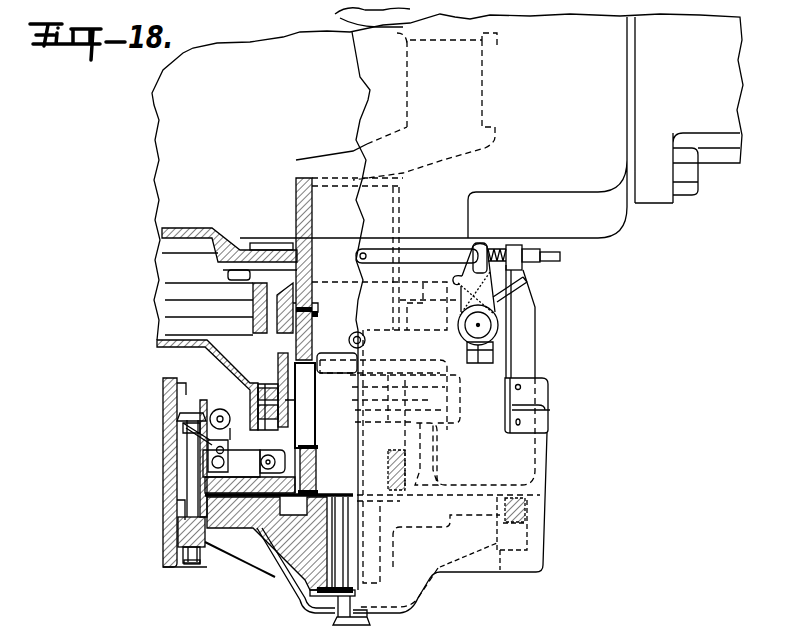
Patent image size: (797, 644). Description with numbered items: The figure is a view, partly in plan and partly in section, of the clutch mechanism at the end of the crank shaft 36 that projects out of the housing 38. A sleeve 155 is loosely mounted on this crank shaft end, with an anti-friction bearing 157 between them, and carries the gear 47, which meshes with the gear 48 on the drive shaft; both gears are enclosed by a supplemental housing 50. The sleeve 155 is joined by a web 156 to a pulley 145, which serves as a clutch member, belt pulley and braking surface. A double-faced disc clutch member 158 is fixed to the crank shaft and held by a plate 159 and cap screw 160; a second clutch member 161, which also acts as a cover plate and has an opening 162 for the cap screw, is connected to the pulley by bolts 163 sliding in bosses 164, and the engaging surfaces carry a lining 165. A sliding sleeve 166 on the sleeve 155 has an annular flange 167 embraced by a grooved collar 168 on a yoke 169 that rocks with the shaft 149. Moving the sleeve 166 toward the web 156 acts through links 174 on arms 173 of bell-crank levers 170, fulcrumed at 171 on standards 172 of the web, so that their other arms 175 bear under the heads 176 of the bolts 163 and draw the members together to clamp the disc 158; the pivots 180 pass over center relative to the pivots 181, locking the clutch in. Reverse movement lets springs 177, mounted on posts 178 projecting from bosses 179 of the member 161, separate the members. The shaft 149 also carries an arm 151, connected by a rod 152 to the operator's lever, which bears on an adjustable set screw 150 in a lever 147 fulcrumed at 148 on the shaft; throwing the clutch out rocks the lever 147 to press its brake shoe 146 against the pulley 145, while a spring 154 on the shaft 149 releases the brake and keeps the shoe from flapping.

The crank shaft 36 is at (478, 99).
The housing 38 is at (567, 233).
The gear 47 is at (275, 342).
The gear 48 is at (168, 327).
The supplemental housing 50 is at (165, 340).
The pulley 145 is at (537, 488).
The brake shoe 146 is at (545, 385).
The lever 147 is at (525, 335).
The fulcrum 148 is at (537, 312).
The shaft 149 is at (480, 345).
The set screw 150 is at (497, 250).
The arm 151 is at (476, 245).
The rod 152 is at (412, 262).
The spring 154 is at (528, 292).
The sleeve 155 is at (298, 412).
The web 156 is at (238, 492).
The anti-friction bearing 157 is at (317, 463).
The clutch member 158 is at (290, 525).
The plate 159 is at (335, 582).
The cap screw 160 is at (368, 627).
The clutch member 161 is at (272, 570).
The opening 162 is at (323, 618).
The bolts 163 is at (192, 496).
The bosses 164 is at (182, 453).
The lining 165 is at (235, 537).
The sleeve 166 is at (260, 388).
The annular flange 167 is at (283, 353).
The grooved collar 168 is at (328, 350).
The yoke 169 is at (359, 342).
The bell-crank levers 170 is at (205, 417).
The fulcrum 171 is at (218, 408).
The standards 172 is at (233, 430).
The arm 173 is at (231, 463).
The link 174 is at (240, 437).
The arm 175 is at (202, 435).
The head 176 is at (182, 413).
The springs 177 is at (543, 528).
The posts 178 is at (515, 552).
The bosses 179 is at (500, 570).
The pivots 180 is at (295, 452).
The pivots 181 is at (178, 452).